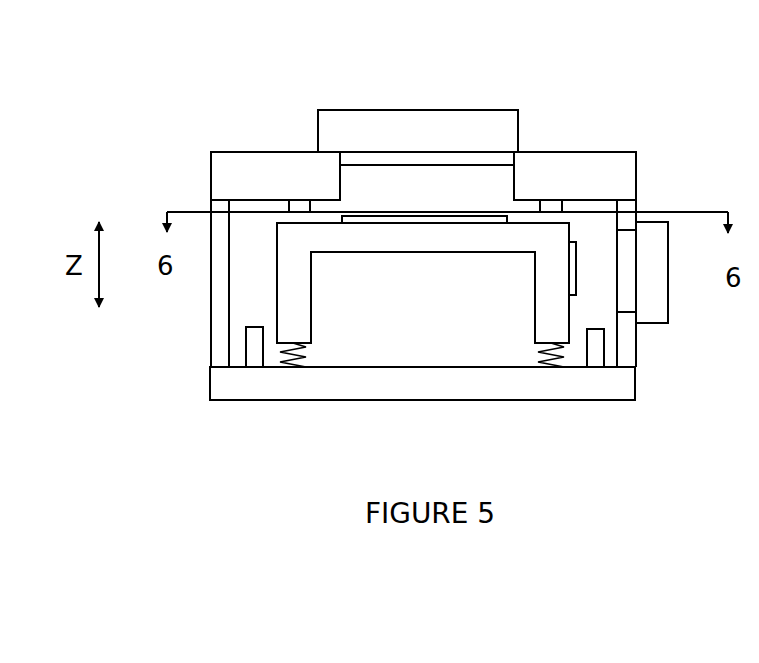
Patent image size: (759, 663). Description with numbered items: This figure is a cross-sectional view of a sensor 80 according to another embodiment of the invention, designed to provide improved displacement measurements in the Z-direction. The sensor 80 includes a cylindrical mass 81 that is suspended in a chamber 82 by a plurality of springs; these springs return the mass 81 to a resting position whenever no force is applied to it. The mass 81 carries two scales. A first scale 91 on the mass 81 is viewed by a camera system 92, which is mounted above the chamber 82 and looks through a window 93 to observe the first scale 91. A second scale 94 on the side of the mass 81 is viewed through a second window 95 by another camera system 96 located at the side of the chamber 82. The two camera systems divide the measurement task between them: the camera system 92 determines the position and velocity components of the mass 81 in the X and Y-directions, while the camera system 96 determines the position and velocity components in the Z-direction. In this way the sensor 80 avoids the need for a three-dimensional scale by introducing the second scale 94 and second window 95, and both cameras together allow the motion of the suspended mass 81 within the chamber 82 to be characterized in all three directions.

The sensor 80 is at (146, 91).
The cylindrical mass 81 is at (500, 248).
The chamber 82 is at (247, 302).
The first scale 91 is at (385, 217).
The camera system 92 is at (503, 120).
The window 93 is at (467, 160).
The second scale 94 is at (579, 243).
The second window 95 is at (623, 283).
The camera system 96 is at (650, 323).